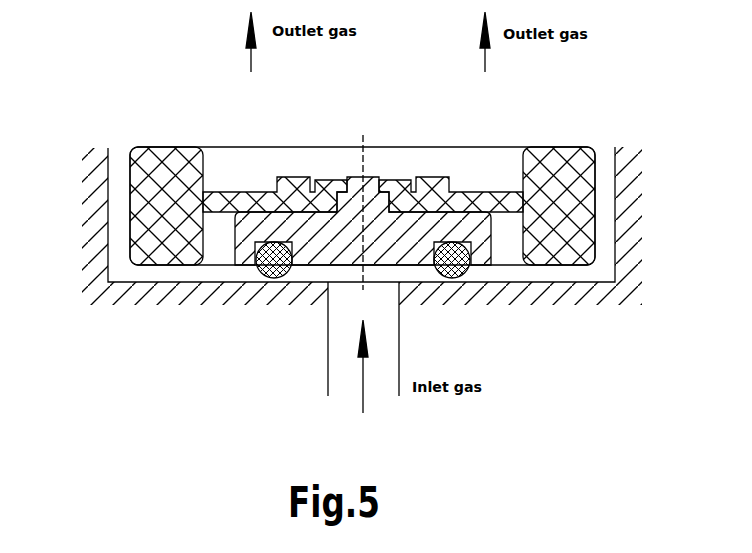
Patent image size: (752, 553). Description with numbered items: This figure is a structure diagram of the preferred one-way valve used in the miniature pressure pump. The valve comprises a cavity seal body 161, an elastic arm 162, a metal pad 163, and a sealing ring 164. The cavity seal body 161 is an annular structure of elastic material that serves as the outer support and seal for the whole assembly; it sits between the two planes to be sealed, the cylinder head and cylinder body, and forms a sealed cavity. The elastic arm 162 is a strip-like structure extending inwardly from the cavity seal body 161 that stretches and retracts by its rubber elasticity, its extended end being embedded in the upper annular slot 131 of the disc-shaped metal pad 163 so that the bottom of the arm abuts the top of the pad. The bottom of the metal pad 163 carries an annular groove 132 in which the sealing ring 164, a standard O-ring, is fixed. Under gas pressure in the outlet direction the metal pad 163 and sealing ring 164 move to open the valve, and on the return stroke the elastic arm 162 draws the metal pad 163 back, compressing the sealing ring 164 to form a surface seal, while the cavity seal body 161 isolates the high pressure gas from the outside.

The annular slot 131 is at (363, 142).
The annular groove 132 is at (510, 299).
The cavity seal body 161 is at (195, 168).
The elastic arm 162 is at (538, 168).
The metal pad 163 is at (369, 266).
The sealing ring 164 is at (236, 297).